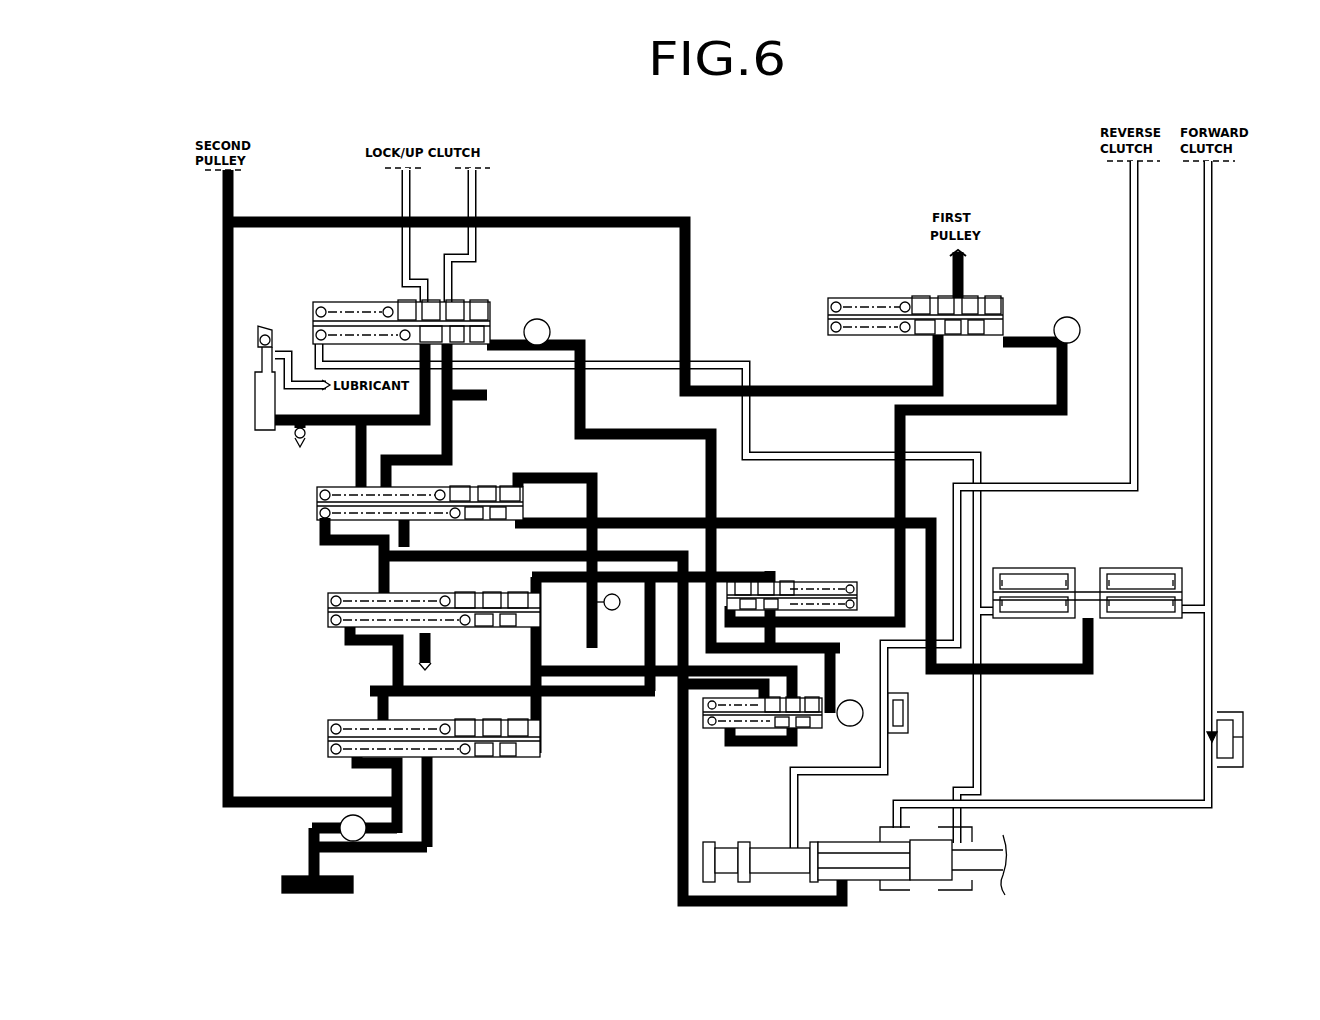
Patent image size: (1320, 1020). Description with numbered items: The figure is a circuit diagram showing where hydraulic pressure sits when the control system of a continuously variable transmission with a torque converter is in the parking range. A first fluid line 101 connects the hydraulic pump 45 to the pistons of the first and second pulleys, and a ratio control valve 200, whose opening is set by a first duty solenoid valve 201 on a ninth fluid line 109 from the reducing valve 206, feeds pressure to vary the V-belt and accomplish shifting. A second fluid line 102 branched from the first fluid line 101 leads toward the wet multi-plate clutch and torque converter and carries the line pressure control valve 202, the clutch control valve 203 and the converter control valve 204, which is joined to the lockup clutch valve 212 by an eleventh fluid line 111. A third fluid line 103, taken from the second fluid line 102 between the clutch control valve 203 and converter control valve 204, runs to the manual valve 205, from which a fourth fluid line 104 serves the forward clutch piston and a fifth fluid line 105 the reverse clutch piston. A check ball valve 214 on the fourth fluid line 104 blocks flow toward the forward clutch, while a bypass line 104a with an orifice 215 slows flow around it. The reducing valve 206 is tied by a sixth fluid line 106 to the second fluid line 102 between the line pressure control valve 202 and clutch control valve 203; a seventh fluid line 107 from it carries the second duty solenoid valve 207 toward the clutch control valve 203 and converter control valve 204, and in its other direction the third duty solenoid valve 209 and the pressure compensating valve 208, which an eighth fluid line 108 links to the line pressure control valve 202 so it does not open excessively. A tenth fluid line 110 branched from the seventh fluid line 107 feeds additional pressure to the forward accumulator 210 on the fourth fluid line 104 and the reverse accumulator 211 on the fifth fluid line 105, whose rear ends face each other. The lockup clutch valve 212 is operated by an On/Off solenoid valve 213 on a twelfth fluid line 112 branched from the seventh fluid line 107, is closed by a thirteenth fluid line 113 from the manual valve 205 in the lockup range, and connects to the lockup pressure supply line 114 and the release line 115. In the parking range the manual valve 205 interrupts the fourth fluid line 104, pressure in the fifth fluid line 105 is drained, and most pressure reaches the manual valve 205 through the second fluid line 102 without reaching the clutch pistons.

The hydraulic pump 45 is at (370, 853).
The first fluid line 101 is at (222, 466).
The second fluid line 102 is at (392, 668).
The third fluid line 103 is at (527, 550).
The fourth fluid line 104 is at (1213, 297).
The bypass line 104a is at (1243, 700).
The fifth fluid line 105 is at (1140, 305).
The sixth fluid line 106 is at (620, 697).
The seventh fluid line 107 is at (618, 490).
The eighth fluid line 108 is at (533, 663).
The ninth fluid line 109 is at (1035, 412).
The tenth fluid line 110 is at (790, 518).
The passage 111 is at (442, 440).
The twelfth fluid line 112 is at (608, 432).
The thirteenth fluid line 113 is at (612, 358).
The lockup pressure supply line 114 is at (402, 186).
The lock-up clutch passage 115 is at (478, 195).
The ratio control valve 200 is at (888, 290).
The first duty solenoid valve 201 is at (1065, 316).
The line pressure control valve 202 is at (330, 730).
The clutch control valve 203 is at (330, 596).
The converter control valve 204 is at (315, 488).
The manual valve 205 is at (765, 840).
The reducing valve 206 is at (845, 578).
The second duty solenoid valve 207 is at (612, 594).
The pressure compensating valve 208 is at (716, 740).
The third duty solenoid valve 209 is at (852, 698).
The forward accumulator 210 is at (1130, 565).
The reverse accumulator 211 is at (1032, 565).
The lockup clutch valve 212 is at (355, 300).
The On/Off solenoid valve 213 is at (540, 318).
The check ball valve 214 is at (1207, 737).
The orifice 215 is at (1243, 737).